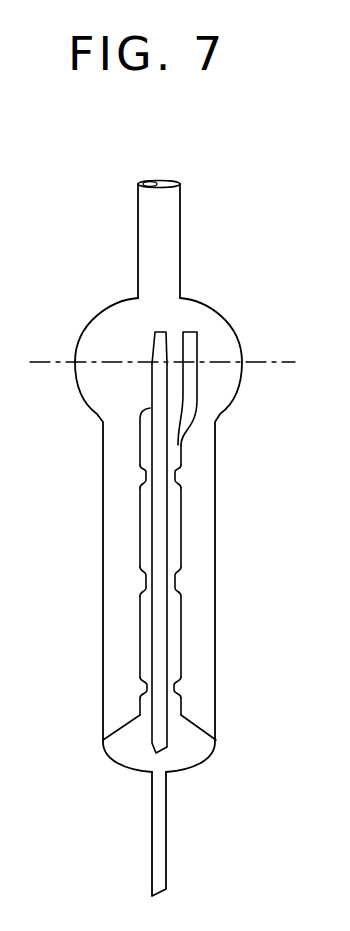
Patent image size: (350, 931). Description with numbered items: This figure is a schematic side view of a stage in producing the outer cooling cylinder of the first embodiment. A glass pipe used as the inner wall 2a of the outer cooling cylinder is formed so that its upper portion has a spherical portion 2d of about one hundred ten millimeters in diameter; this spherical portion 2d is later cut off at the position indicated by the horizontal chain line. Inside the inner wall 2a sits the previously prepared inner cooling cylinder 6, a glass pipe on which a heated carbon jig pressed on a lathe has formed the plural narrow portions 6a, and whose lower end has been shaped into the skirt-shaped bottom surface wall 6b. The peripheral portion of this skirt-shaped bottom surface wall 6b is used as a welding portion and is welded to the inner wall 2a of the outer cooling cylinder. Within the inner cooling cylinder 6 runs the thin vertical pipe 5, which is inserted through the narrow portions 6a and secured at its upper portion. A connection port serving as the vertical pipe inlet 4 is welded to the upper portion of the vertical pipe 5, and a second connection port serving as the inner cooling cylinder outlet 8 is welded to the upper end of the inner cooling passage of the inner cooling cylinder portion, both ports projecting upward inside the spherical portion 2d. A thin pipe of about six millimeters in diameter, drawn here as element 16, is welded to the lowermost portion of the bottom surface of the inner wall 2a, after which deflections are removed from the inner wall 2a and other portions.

The inner wall of the outer cooling cylinder 2a is at (215, 618).
The spherical portion 2d is at (188, 303).
The vertical pipe inlet 4 is at (160, 330).
The vertical pipe 5 is at (168, 525).
The inner cooling cylinder 6 is at (181, 561).
The narrow portions 6a is at (178, 472).
The skirt-shaped bottom surface wall 6b is at (197, 722).
The inner cooling cylinder outlet 8 is at (193, 340).
The exhaust tube 16 is at (160, 827).